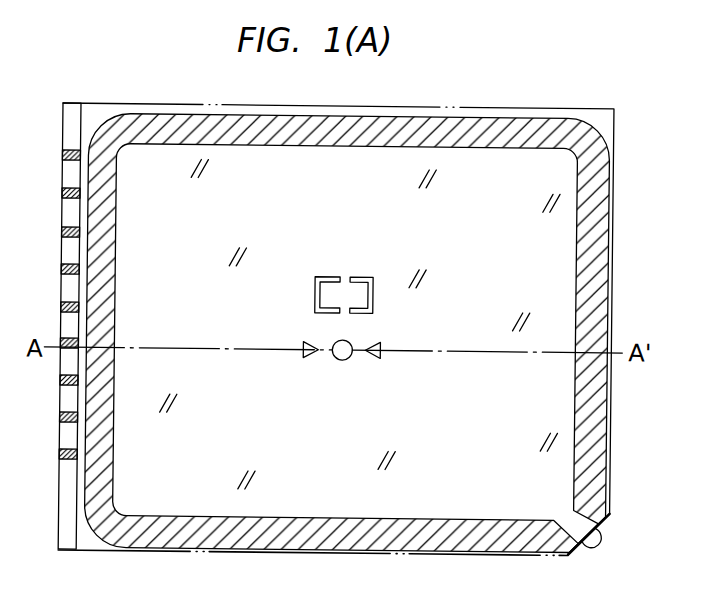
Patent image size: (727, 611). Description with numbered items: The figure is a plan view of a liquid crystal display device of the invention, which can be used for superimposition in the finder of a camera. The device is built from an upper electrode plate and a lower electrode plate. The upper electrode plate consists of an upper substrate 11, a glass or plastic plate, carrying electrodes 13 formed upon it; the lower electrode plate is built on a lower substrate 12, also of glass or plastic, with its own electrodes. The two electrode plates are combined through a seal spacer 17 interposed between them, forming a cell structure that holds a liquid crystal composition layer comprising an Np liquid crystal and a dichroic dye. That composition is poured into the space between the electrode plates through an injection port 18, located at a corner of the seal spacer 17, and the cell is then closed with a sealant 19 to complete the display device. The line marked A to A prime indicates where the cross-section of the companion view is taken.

The upper substrate 11 is at (600, 112).
The lower substrate 12 is at (71, 111).
The electrodes 13 is at (315, 339).
The seal spacer 17 is at (507, 538).
The injection port 18 is at (584, 523).
The sealant 19 is at (592, 542).